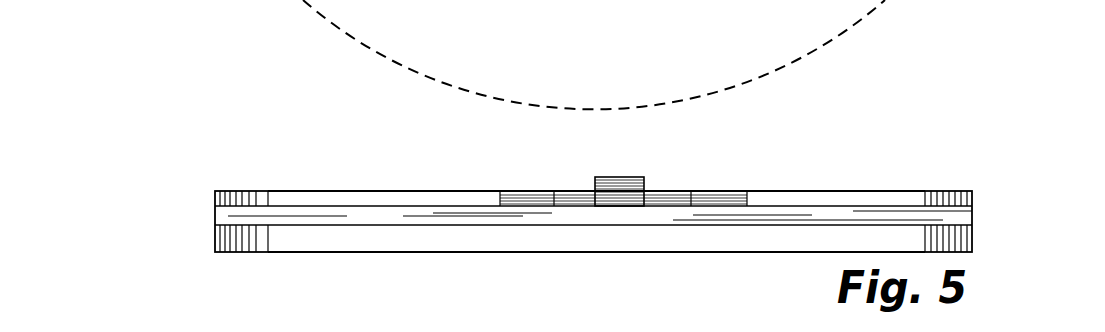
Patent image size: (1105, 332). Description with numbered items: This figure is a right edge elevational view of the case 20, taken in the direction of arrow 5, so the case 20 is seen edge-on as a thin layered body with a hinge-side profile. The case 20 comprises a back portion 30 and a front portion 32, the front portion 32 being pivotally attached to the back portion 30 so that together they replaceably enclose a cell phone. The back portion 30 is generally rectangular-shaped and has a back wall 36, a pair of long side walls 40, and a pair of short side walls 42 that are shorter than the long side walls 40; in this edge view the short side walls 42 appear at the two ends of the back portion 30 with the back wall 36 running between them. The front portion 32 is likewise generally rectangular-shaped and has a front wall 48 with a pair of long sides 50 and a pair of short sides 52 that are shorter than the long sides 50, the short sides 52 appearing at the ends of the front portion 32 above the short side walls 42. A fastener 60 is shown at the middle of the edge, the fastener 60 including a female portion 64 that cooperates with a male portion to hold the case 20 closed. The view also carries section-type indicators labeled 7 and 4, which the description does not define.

The arrow 5 is at (594, 54).
The case 20 is at (222, 163).
The front portion 32 is at (384, 184).
The front wall 48 is at (857, 182).
The back portion 30 is at (515, 262).
The back wall 36 is at (653, 262).
The long side walls 40 is at (737, 243).
The short sides 52 is at (213, 199).
The short side walls 42 is at (207, 246).
The long sides 50 is at (773, 198).
The fastener 60 is at (601, 170).
The female portion 64 is at (613, 177).
The section view 7 indicator 7 is at (192, 217).
The section view 4 indicator 4 is at (1006, 220).